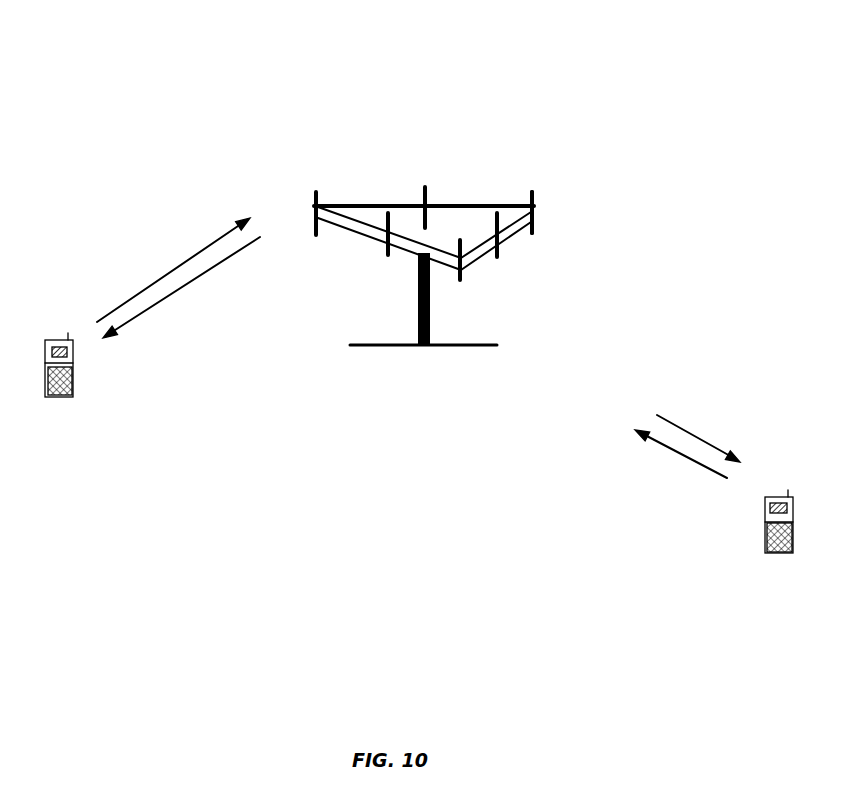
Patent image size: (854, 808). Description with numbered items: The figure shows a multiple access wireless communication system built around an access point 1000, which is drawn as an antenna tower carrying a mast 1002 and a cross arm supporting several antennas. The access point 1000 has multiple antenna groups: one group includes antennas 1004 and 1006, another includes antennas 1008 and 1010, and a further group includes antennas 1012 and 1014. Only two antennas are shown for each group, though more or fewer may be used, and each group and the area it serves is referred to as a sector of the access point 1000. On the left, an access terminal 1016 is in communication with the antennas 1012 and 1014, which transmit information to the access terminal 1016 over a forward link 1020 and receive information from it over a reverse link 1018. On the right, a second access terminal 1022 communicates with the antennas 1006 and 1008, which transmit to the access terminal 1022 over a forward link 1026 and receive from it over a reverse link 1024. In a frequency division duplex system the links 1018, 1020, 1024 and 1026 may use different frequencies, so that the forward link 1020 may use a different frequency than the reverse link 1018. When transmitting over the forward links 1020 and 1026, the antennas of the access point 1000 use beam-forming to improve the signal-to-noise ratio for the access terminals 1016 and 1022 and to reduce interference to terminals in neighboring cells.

The access point 1000 is at (395, 345).
The tower mast 1002 is at (424, 299).
The antenna 1004 is at (462, 279).
The antenna 1006 is at (499, 257).
The antenna 1008 is at (538, 227).
The antenna 1010 is at (423, 188).
The antenna 1012 is at (318, 203).
The antenna 1014 is at (388, 255).
The access terminal 1016 is at (70, 337).
The reverse link 1018 is at (173, 270).
The forward link 1020 is at (192, 285).
The access terminal 1022 is at (788, 492).
The reverse link 1024 is at (667, 450).
The forward link 1026 is at (703, 440).